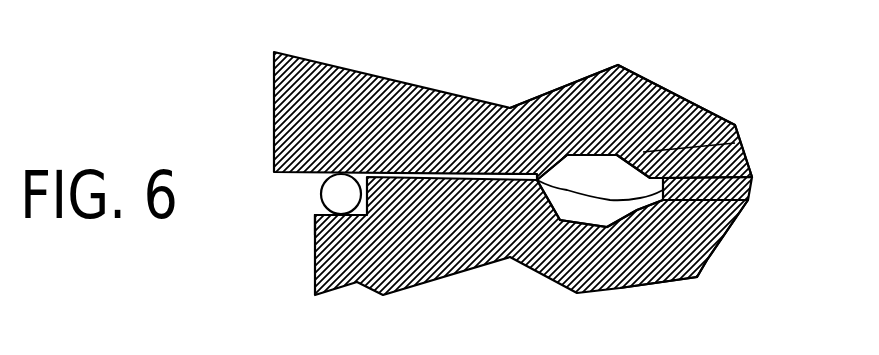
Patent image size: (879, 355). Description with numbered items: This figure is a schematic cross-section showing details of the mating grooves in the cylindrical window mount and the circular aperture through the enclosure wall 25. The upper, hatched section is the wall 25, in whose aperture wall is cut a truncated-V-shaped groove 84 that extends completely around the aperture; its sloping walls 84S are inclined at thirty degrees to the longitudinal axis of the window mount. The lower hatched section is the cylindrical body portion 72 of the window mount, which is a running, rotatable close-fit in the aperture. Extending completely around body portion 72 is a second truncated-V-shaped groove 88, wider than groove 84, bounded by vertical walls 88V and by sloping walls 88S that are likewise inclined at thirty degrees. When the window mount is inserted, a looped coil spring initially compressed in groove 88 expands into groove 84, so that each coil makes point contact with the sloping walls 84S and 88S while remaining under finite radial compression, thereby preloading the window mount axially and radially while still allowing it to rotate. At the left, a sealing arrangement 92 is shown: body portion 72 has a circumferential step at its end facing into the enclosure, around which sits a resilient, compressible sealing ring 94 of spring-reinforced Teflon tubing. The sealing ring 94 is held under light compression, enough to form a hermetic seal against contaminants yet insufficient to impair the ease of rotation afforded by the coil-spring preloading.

The wall 25 is at (415, 96).
The groove 84 is at (636, 126).
The sloping walls 84S is at (572, 152).
The groove 88 is at (563, 288).
The sloping walls 88S is at (640, 215).
The vertical walls 88V is at (690, 207).
The body portion 72 is at (695, 230).
The sealing arrangement 92 is at (290, 189).
The sealing ring 94 is at (327, 208).